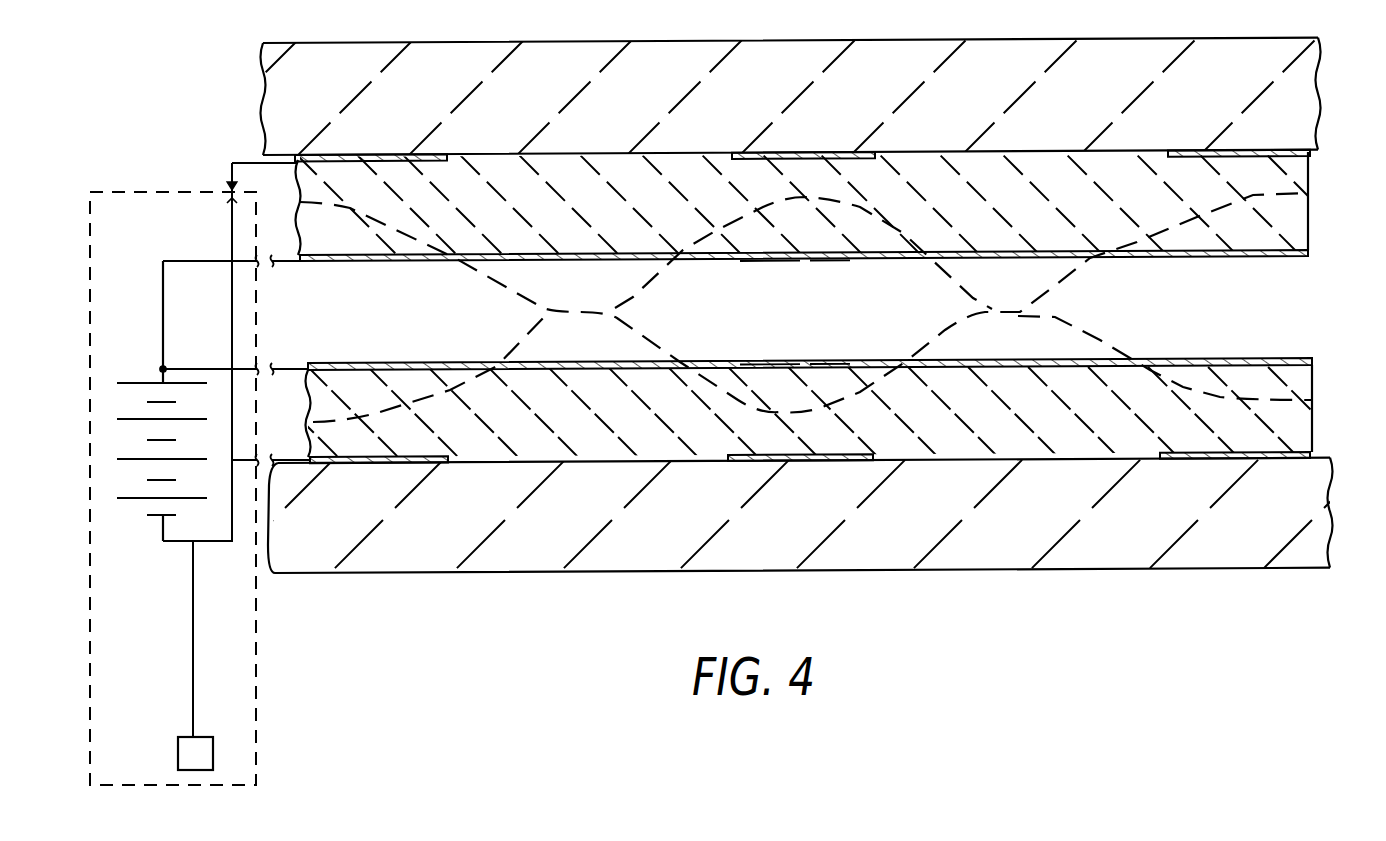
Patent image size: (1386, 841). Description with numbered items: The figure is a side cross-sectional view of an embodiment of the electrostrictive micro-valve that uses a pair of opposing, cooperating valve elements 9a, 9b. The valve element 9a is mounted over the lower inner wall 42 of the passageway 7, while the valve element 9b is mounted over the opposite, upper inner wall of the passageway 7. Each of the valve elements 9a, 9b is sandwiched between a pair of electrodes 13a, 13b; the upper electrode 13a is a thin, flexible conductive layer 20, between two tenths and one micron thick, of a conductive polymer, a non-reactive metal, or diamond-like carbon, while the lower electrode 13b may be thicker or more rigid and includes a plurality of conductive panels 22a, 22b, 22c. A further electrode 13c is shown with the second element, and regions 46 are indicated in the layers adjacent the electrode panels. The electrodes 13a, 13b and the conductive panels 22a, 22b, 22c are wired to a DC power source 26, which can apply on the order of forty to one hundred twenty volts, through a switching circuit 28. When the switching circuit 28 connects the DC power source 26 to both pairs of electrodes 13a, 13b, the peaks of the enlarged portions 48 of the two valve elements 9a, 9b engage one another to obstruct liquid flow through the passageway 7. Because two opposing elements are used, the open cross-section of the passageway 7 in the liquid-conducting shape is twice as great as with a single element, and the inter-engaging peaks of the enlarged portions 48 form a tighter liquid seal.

The passageway 7 is at (840, 323).
The valve element 9a is at (1313, 370).
The valve element 9b is at (1308, 208).
The upper electrode 13a is at (355, 266).
The lower electrode 13b is at (322, 152).
The lower inner electrode 13c is at (366, 357).
The conductive layer 20 is at (775, 259).
The conductive panel 22a is at (407, 467).
The conductive panel 22b is at (795, 462).
The conductive panel 22c is at (1195, 460).
The DC power source 26 is at (147, 500).
The switching circuit 28 is at (178, 753).
The lower inner wall 42 is at (958, 460).
The electrode segments 46 is at (337, 183).
The enlarged portions 48 is at (595, 298).